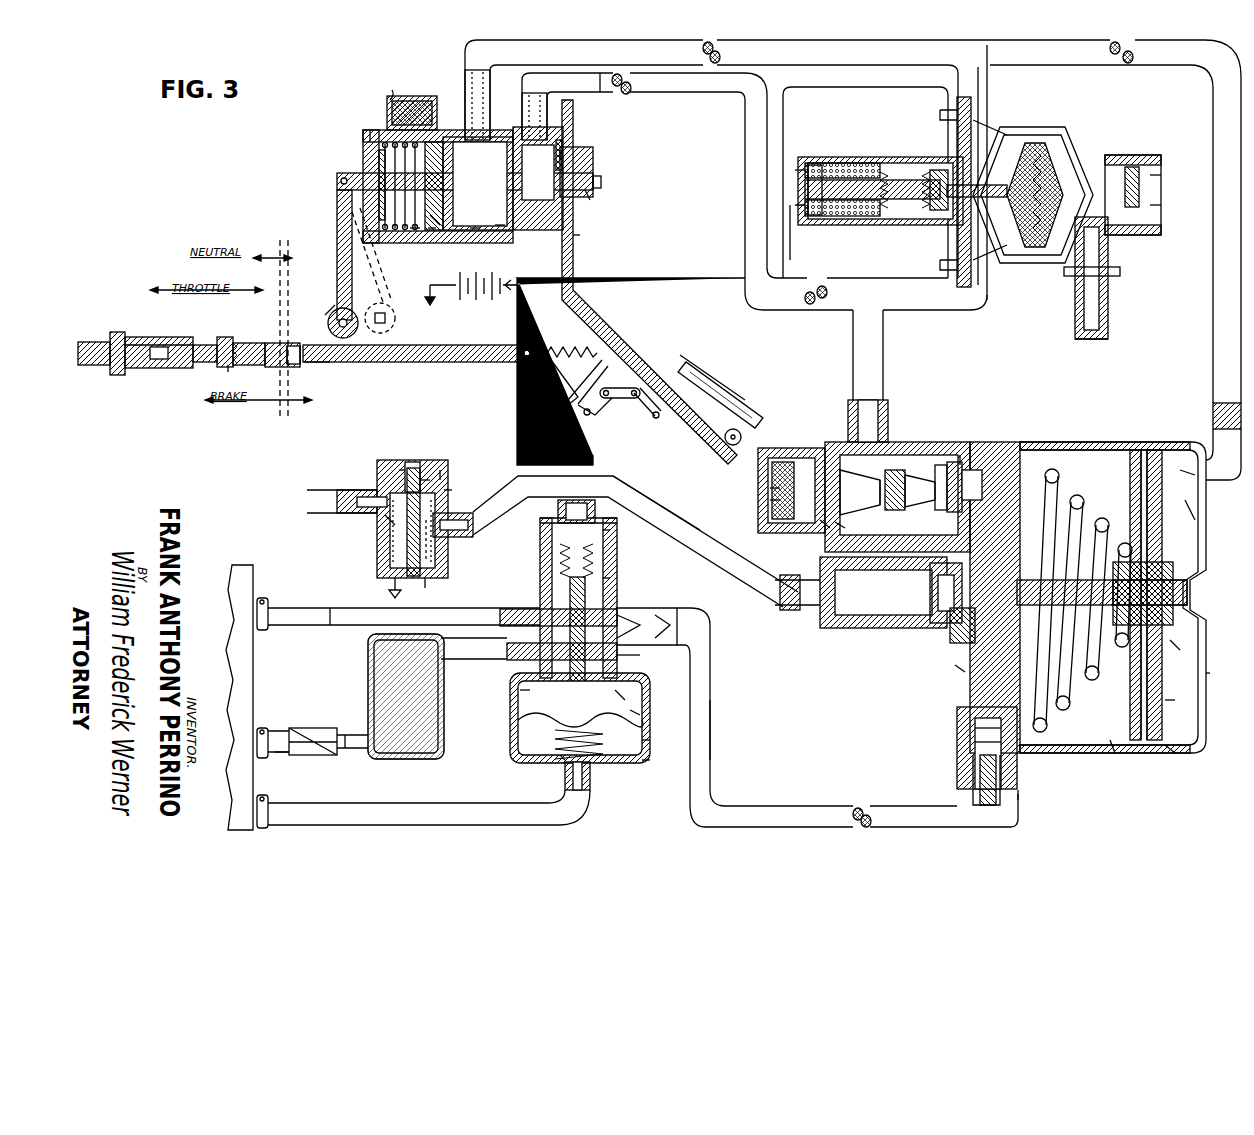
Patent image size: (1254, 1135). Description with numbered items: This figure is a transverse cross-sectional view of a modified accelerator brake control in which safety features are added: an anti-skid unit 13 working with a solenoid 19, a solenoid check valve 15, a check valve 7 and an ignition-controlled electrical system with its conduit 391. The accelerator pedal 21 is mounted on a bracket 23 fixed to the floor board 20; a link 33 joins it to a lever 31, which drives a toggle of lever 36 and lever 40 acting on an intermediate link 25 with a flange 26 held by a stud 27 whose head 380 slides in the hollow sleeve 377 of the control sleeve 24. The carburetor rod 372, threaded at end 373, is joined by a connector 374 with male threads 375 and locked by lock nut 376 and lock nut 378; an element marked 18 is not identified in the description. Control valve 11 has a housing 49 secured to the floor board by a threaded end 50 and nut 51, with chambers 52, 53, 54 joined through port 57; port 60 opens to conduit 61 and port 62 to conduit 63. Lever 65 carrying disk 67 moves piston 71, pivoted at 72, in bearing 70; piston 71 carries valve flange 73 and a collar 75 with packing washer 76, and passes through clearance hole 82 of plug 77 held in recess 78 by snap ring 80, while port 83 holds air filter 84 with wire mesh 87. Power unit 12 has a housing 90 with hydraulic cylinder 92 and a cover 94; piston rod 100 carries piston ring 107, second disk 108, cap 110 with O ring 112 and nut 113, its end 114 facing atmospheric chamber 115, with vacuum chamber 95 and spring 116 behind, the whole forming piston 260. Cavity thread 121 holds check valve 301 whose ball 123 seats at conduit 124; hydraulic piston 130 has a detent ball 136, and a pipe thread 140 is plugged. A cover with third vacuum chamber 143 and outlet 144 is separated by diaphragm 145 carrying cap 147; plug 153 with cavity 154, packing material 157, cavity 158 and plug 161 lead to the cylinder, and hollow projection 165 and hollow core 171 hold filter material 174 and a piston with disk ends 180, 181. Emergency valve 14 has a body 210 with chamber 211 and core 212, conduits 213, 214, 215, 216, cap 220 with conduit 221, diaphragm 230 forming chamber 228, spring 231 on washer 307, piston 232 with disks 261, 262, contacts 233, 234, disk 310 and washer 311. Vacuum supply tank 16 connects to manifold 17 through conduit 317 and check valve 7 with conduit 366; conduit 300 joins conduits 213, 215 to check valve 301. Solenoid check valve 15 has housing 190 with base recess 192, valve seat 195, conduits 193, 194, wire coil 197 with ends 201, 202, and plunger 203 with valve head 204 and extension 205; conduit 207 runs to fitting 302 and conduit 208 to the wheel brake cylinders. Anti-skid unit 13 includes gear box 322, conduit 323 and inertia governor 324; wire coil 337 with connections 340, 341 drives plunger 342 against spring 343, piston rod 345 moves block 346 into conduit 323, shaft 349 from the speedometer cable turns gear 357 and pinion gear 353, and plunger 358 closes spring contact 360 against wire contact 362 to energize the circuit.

The check valve 7 is at (311, 715).
The control valve 11 is at (356, 93).
The power unit 12 is at (1126, 408).
The anti-skid unit 13 is at (1000, 312).
The emergency valve 14 is at (612, 780).
The solenoid check valve 15 is at (322, 547).
The vacuum supply tank 16 is at (0, 0).
The manifold 17 is at (0, 0).
The linkage lever 18 is at (736, 383).
The solenoid 19 is at (870, 252).
The floor board 20 is at (575, 258).
The accelerator pedal 21 is at (682, 365).
The bracket 23 is at (725, 442).
The control sleeve 24 is at (300, 375).
The intermediate link 25 is at (427, 364).
The flange 26 is at (333, 310).
The stud 27 is at (330, 364).
The lever 31 is at (618, 399).
The link 33 is at (662, 418).
The lever 36 is at (558, 378).
The lever 40 is at (588, 415).
The housing 49 is at (580, 236).
The threaded end 50 is at (600, 184).
The nut 51 is at (594, 165).
The chamber 52 is at (565, 155).
The chamber 53 is at (500, 215).
The chamber 54 is at (434, 230).
The port 57 is at (478, 215).
The port 60 is at (545, 150).
The conduit 61 is at (602, 85).
The port 62 is at (522, 104).
The conduit 63 is at (512, 58).
The lever 65 is at (337, 277).
The disk 67 is at (366, 300).
The bearing 70 is at (587, 196).
The piston 71 is at (0, 0).
The pivot connection 72 is at (340, 181).
The valve flange 73 is at (566, 150).
The collar 75 is at (437, 142).
The washer of packing material 76 is at (445, 215).
The plug 77 is at (383, 152).
The recess 78 is at (372, 130).
The snap ring 80 is at (418, 230).
The clearance hole 82 is at (381, 172).
The port 83 is at (416, 104).
The air filter 84 is at (393, 75).
The wire mesh 87 is at (392, 100).
The housing 90 is at (965, 715).
The hydraulic cylinder 92 is at (850, 628).
The cover 94 is at (1206, 520).
The vacuum chamber 95 is at (1110, 750).
The piston rod 100 is at (1130, 590).
The piston ring 107 is at (1170, 752).
The second disk 108 is at (1180, 700).
The cap 110 is at (1180, 652).
The O ring 112 is at (1150, 462).
The nut 113 is at (1165, 572).
The end of piston rod 114 is at (1180, 610).
The atmospheric chamber 115 is at (1190, 470).
The spring 116 is at (1075, 735).
The thread 121 is at (972, 770).
The ball 123 is at (965, 742).
The conduit 124 is at (965, 730).
The hydraulic piston 130 is at (950, 640).
The ball 136 is at (920, 610).
The pipe thread 140 is at (960, 675).
The third vacuum chamber 143 is at (855, 455).
The outlet 144 is at (860, 420).
The diaphragm 145 is at (895, 470).
The cap 147 is at (898, 465).
The plug 153 is at (945, 470).
The cavity 154 is at (930, 462).
The packing material 157 is at (985, 460).
The cavity 158 is at (1000, 478).
The plug 161 is at (965, 455).
The hollow projection 165 is at (835, 450).
The hollow core 171 is at (770, 490).
The filter material 174 is at (770, 502).
The disk end 180 is at (826, 522).
The disk end 181 is at (838, 525).
The housing 190 is at (445, 475).
The base recess 192 is at (432, 480).
The conduit 193 is at (458, 512).
The conduit 194 is at (362, 495).
The valve seat 195 is at (385, 520).
The wire coil 197 is at (448, 560).
The coil end 201 is at (385, 583).
The coil end 202 is at (428, 585).
The plunger 203 is at (415, 470).
The valve head 204 is at (455, 492).
The extension 205 is at (405, 470).
The conduit 207 is at (618, 478).
The conduit 208 is at (307, 500).
The body 210 is at (518, 708).
The chamber 211 is at (645, 716).
The core 212 is at (630, 700).
The conduit 213 is at (635, 652).
The conduit 214 is at (476, 660).
The conduit 215 is at (660, 628).
The conduit 216 is at (335, 610).
The cap 220 is at (650, 742).
The conduit 221 is at (565, 788).
The chamber 228 is at (660, 762).
The diaphragm 230 is at (545, 728).
The spring 231 is at (556, 772).
The piston 232 is at (603, 604).
The electrical contact 233 is at (558, 500).
The electrical contact 234 is at (612, 530).
The piston 260 is at (1192, 678).
The disk 261 is at (525, 690).
The disk 262 is at (625, 612).
The conduit 300 is at (712, 727).
The check valve 301 is at (1024, 782).
The fitting 302 is at (822, 626).
The washer 307 is at (562, 758).
The disk 310 is at (600, 548).
The washer 311 is at (612, 577).
The conduit 317 is at (282, 752).
The gear box 322 is at (1108, 335).
The conduit 323 is at (955, 110).
The inertia governor 324 is at (1074, 126).
The wire coil 337 is at (822, 165).
The wire connection 340 is at (805, 165).
The wire connection 341 is at (800, 225).
The plunger 342 is at (820, 220).
The spring 343 is at (888, 165).
The piston rod 345 is at (1000, 240).
The block 346 is at (925, 210).
The shaft 349 is at (1120, 270).
The pinion gear 353 is at (1100, 152).
The gear 357 is at (1100, 300).
The plunger 358 is at (1130, 167).
The spring contact 360 is at (1161, 207).
The wire contact 362 is at (1161, 175).
The conduit 366 is at (348, 733).
The carburetor rod 372 is at (90, 368).
The threaded end 373 is at (105, 345).
The connector 374 is at (180, 370).
The male threads 375 is at (222, 342).
The lock nut 376 is at (122, 340).
The hollow sleeve 377 is at (283, 250).
The lock nut 378 is at (233, 368).
The head 380 is at (268, 345).
The conduit 391 is at (517, 316).